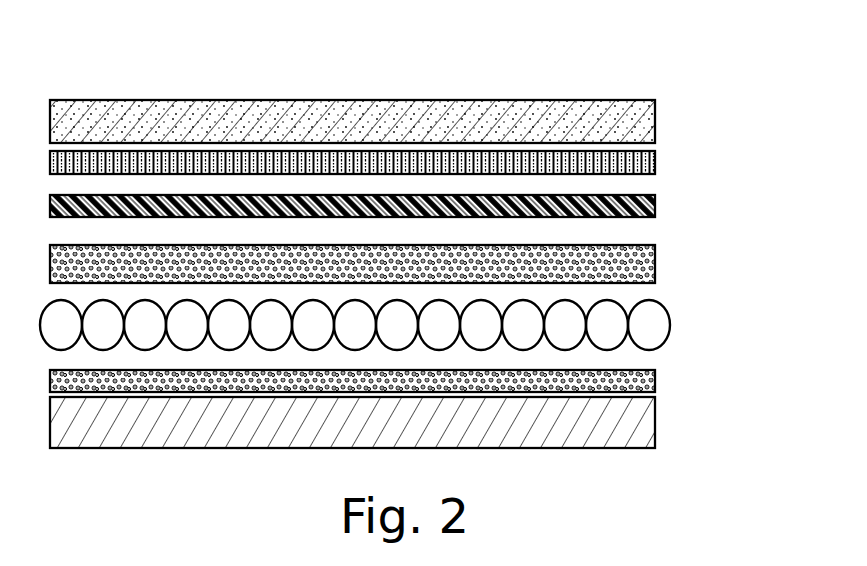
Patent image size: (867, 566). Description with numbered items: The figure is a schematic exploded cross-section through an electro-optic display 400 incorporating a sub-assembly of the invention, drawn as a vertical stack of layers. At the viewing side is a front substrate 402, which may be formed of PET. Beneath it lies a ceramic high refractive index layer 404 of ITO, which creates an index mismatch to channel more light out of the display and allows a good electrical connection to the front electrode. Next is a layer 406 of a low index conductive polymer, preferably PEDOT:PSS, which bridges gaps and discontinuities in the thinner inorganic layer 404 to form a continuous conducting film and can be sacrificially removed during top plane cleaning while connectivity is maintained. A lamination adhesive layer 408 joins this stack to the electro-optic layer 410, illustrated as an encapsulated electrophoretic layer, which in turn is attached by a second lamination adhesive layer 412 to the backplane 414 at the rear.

The electro-optic display 400 is at (602, 78).
The front substrate 402 is at (655, 127).
The ceramic high refractive index layer 404 is at (655, 168).
The low index conductive polymer layer 406 is at (655, 210).
The lamination adhesive layer 408 is at (655, 263).
The electro-optic layer 410 is at (658, 327).
The lamination adhesive layer 412 is at (655, 383).
The backplane 414 is at (655, 422).